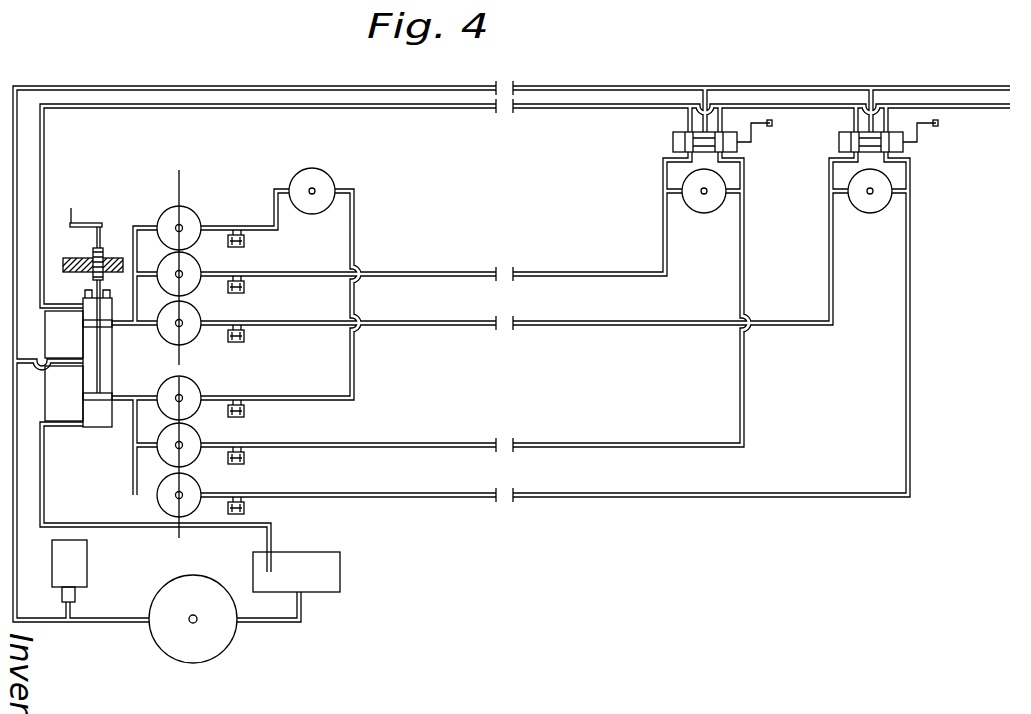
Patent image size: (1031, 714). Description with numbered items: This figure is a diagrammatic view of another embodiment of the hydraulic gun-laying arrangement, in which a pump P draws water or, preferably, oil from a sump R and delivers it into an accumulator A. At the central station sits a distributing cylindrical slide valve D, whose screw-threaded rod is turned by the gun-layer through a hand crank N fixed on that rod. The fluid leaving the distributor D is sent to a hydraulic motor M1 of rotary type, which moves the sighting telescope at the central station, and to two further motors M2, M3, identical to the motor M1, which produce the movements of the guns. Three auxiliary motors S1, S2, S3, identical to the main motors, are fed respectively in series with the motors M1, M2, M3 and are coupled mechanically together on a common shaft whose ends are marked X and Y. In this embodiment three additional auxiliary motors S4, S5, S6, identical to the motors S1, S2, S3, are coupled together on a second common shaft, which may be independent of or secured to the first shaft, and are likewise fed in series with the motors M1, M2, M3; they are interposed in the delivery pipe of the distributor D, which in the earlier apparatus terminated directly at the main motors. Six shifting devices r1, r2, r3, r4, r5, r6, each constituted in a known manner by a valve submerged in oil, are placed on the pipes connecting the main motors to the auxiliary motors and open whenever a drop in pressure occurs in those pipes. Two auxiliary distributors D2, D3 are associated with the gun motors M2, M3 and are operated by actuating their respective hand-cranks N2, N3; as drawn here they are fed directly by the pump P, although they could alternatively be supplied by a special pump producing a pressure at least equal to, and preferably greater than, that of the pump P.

The hand crank N is at (87, 222).
The distributing cylindrical slide valve D is at (112, 349).
The auxiliary motor S1 is at (197, 395).
The auxiliary motor S2 is at (193, 438).
The auxiliary motor S3 is at (193, 490).
The auxiliary motor S4 is at (190, 216).
The auxiliary motor S5 is at (193, 268).
The auxiliary motor S6 is at (192, 318).
The shifting device r1 is at (245, 418).
The shifting device r2 is at (245, 465).
The shifting device r3 is at (245, 515).
The shifting device r4 is at (245, 248).
The shifting device r5 is at (245, 294).
The shifting device r6 is at (245, 343).
The hydraulic motor M1 is at (310, 205).
The motor M2 is at (698, 205).
The motor M3 is at (865, 205).
The auxiliary distributor D2 is at (673, 143).
The auxiliary distributor D3 is at (839, 143).
The hand-crank N2 is at (752, 134).
The hand-crank N3 is at (918, 137).
The accumulator A is at (86, 562).
The pump P is at (207, 591).
The sump R is at (318, 563).
The common shaft X—Y X is at (171, 344).
The common shaft X— Y is at (169, 448).